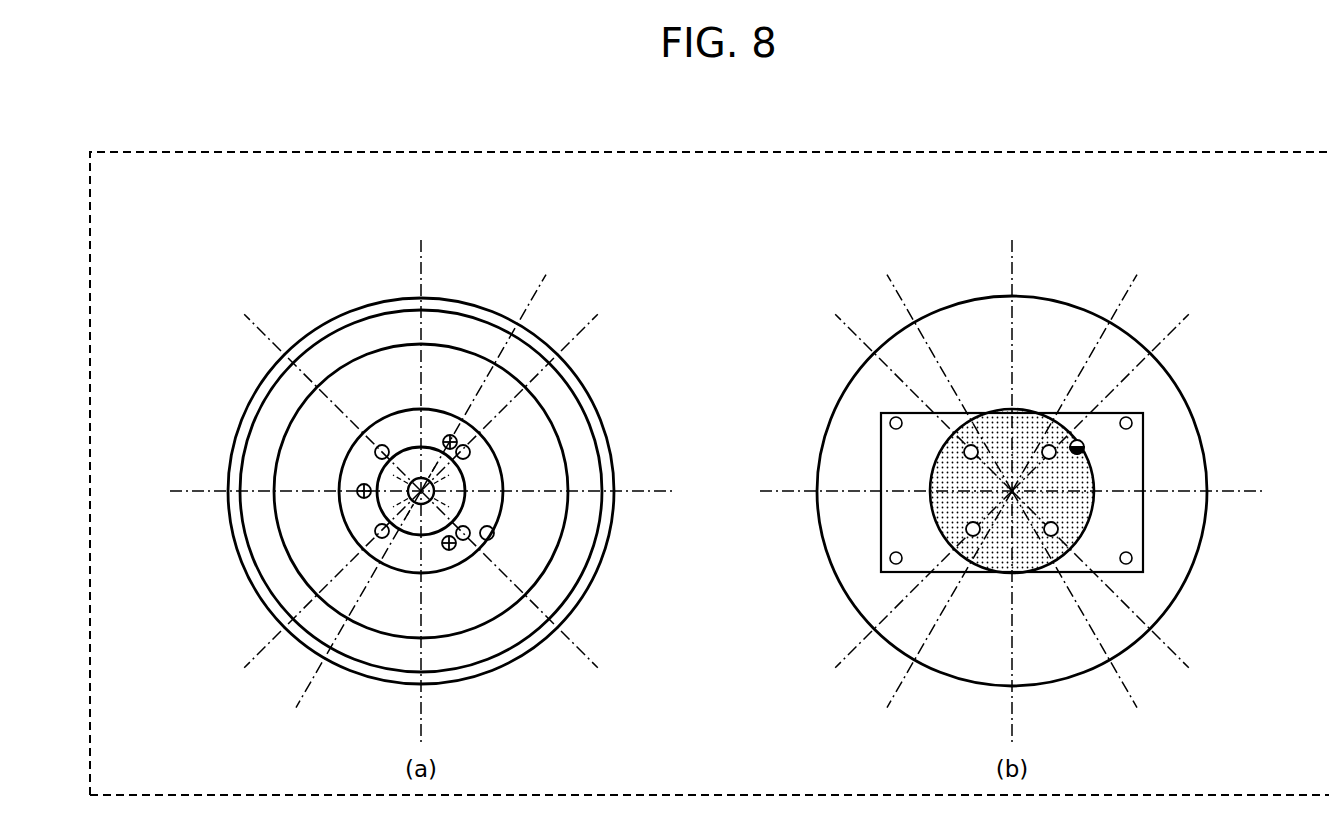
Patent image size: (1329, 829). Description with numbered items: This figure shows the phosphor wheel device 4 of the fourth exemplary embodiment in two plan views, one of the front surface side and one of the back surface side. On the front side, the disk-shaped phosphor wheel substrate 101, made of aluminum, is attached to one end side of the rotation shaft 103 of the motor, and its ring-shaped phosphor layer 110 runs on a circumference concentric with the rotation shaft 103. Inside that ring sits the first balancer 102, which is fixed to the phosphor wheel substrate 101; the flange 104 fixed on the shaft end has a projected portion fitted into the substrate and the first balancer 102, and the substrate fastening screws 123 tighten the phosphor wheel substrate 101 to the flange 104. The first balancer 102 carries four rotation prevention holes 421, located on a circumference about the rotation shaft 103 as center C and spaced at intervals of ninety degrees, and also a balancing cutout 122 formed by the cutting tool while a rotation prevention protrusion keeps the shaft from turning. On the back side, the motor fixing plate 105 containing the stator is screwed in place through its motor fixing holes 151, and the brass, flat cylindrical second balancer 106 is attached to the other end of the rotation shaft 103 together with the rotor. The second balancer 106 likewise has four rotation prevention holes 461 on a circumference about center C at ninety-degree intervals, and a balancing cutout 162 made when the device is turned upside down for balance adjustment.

The phosphor wheel device 4 is at (354, 255).
The phosphor wheel substrate 101 is at (327, 420).
The first balancer 102 is at (479, 461).
The rotation shaft 103 is at (435, 488).
The flange 104 is at (390, 501).
The motor fixing plate 105 is at (1103, 560).
The second balancer 106 is at (943, 502).
The phosphor layer 110 is at (263, 539).
The balancing cutout 122 is at (468, 537).
The substrate fastening screw 123 is at (452, 550).
The motor fixing hole 151 is at (1143, 565).
The balancing cutout 162 is at (1083, 449).
The rotation prevention hole 421 is at (377, 449).
The rotation prevention hole 461 is at (1049, 445).
The center C is at (421, 491).